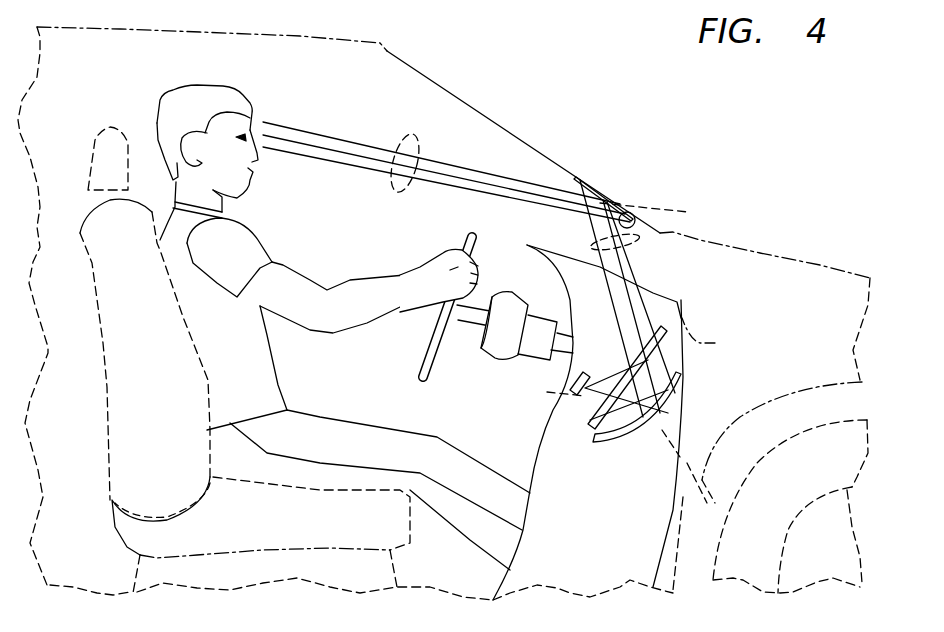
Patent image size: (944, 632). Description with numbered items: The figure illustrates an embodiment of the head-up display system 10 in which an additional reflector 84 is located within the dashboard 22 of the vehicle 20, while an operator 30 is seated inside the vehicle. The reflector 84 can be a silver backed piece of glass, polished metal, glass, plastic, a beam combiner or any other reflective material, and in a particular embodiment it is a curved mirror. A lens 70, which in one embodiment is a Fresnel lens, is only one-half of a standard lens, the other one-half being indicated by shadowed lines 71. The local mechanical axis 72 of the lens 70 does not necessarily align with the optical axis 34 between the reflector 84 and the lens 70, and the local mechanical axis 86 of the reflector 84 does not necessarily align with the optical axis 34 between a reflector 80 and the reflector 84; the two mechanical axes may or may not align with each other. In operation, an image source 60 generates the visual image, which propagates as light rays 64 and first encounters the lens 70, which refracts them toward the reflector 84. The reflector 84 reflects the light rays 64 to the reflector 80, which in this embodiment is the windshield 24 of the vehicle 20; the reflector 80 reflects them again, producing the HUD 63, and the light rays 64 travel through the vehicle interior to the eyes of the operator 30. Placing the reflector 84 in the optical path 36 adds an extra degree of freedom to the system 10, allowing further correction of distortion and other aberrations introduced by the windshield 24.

The system 10 is at (716, 124).
The vehicle 20 is at (800, 263).
The dashboard 22 is at (657, 288).
The windshield 24 is at (477, 107).
The operator 30 is at (155, 118).
The optical axis 34 is at (681, 210).
The optical path 36 is at (403, 193).
The image source 60 is at (570, 393).
The HUD 63 is at (630, 212).
The light rays 64 is at (598, 245).
The lens 70 is at (588, 428).
The shadowed lines 71 is at (714, 336).
The local mechanical axis 72 is at (622, 368).
The reflector 80 is at (587, 193).
The reflector 84 is at (600, 442).
The local mechanical axis 86 is at (700, 475).